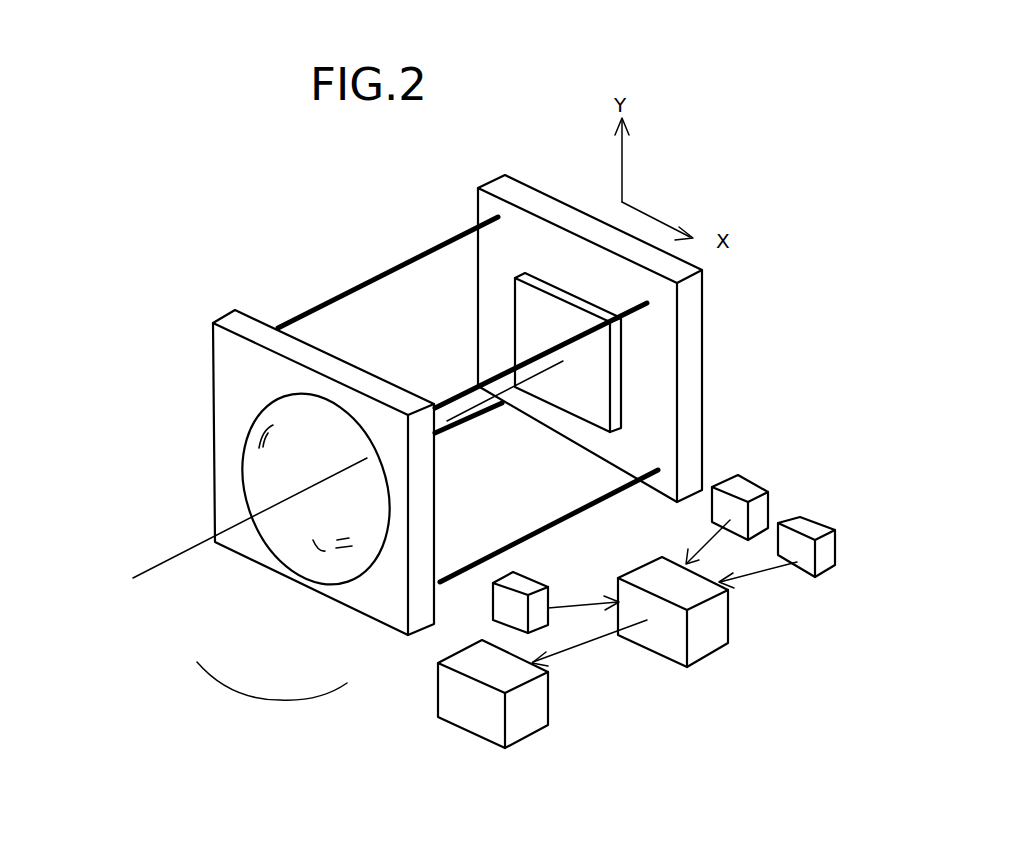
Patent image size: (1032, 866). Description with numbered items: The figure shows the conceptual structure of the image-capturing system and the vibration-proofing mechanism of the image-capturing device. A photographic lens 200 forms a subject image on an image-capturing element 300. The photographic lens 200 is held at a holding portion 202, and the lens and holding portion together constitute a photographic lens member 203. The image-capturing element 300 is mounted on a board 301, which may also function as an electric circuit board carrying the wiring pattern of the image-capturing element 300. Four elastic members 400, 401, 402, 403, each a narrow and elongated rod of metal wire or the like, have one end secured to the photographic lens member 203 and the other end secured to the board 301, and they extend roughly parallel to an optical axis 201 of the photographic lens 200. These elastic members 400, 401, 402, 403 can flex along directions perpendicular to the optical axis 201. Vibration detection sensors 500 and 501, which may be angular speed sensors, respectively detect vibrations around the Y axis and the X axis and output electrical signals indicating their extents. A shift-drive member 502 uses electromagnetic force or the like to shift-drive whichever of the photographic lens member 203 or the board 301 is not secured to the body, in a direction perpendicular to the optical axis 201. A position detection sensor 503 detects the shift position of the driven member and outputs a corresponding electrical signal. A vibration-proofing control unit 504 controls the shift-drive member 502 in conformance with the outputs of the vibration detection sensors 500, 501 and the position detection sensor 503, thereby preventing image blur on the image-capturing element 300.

The photographic lens 200 is at (277, 543).
The optical axis 201 is at (170, 549).
The holding portion 202 is at (373, 607).
The photographic lens member 203 is at (250, 693).
The image-capturing element 300 is at (605, 390).
The board 301 is at (665, 343).
The elastic member 400 is at (362, 278).
The elastic member 401 is at (460, 390).
The elastic member 402 is at (478, 553).
The elastic member 403 is at (453, 433).
The vibration detection sensor 500 is at (732, 477).
The vibration detection sensor 501 is at (800, 520).
The shift-drive member 502 is at (453, 728).
The position detection sensor 503 is at (533, 575).
The vibration-proofing control unit 504 is at (705, 648).